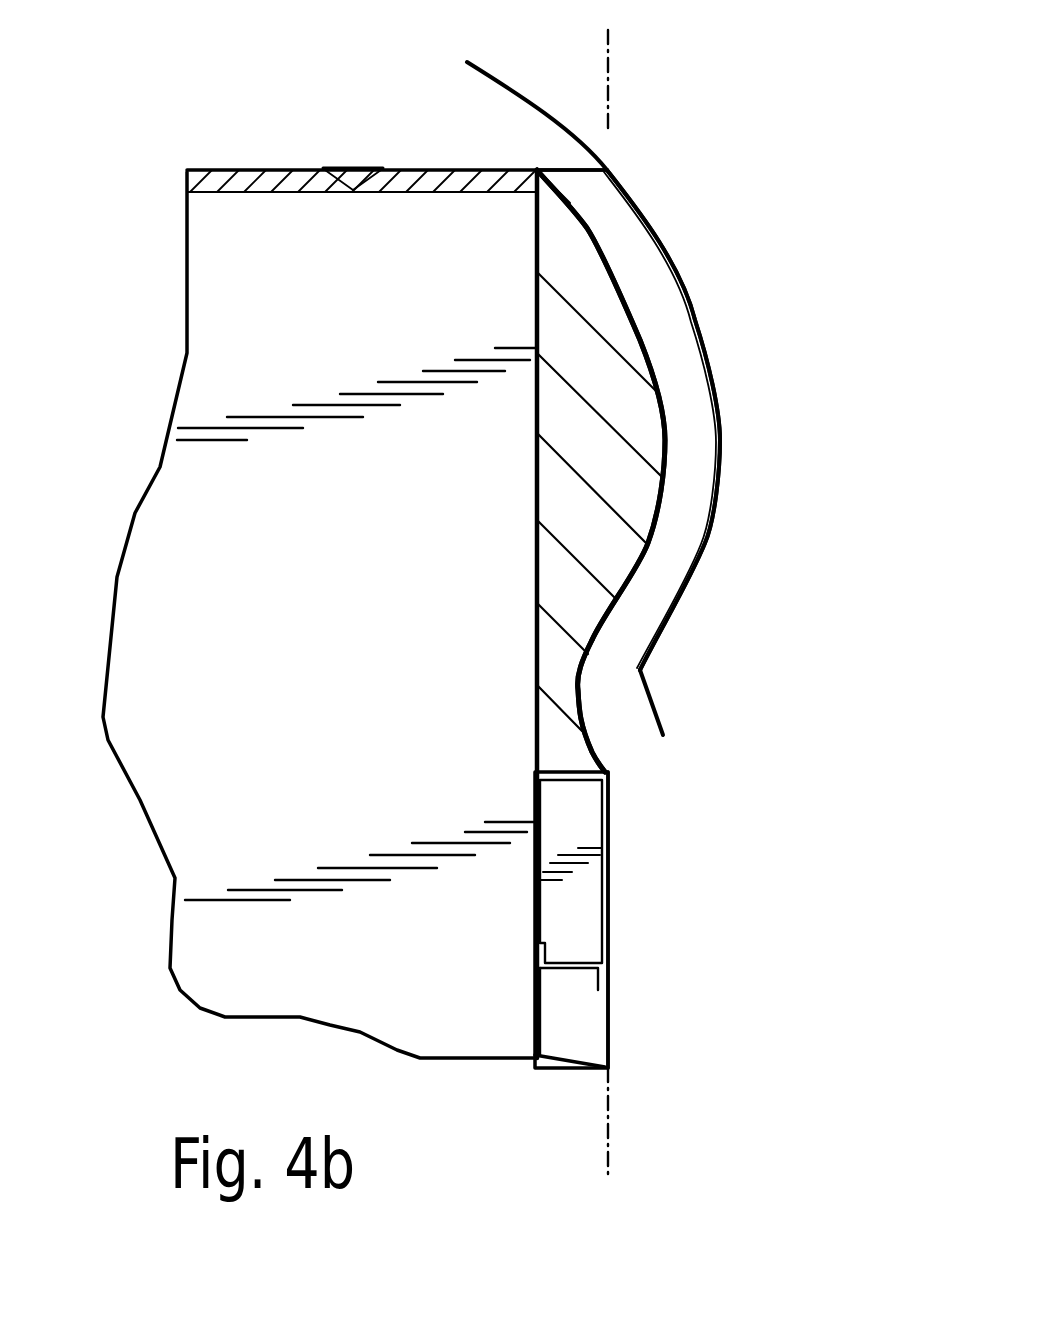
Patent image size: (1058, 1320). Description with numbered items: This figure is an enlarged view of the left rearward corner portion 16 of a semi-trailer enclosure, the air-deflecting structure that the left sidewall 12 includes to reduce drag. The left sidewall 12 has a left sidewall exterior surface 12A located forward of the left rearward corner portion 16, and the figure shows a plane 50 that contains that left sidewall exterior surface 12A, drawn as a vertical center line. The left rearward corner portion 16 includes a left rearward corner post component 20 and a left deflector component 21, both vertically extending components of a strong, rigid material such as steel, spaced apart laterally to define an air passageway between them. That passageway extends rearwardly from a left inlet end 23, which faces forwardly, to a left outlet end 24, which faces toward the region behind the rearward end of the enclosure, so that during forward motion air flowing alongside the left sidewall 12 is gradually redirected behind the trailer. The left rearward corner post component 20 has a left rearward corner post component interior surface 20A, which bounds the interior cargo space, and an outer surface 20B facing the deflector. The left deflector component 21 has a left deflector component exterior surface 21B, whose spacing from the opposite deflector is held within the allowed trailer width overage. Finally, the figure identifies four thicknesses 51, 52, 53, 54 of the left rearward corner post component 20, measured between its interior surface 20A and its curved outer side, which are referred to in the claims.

The left sidewall 12 is at (608, 965).
The left sidewall exterior surface 12A is at (628, 1042).
The left rearward corner portion 16 is at (795, 805).
The left rearward corner post component 20 is at (609, 303).
The left rearward corner post component interior surface 20A is at (520, 553).
The outer surface of nose member 20B is at (682, 502).
The left deflector component 21 is at (703, 303).
The left deflector component exterior surface 21B is at (742, 359).
The left inlet end 23 is at (668, 752).
The left outlet end 24 is at (550, 152).
The plane 50 is at (610, 50).
The thickness 51 is at (655, 772).
The thickness 52 is at (622, 692).
The thickness 53 is at (710, 438).
The thickness 54 is at (612, 203).